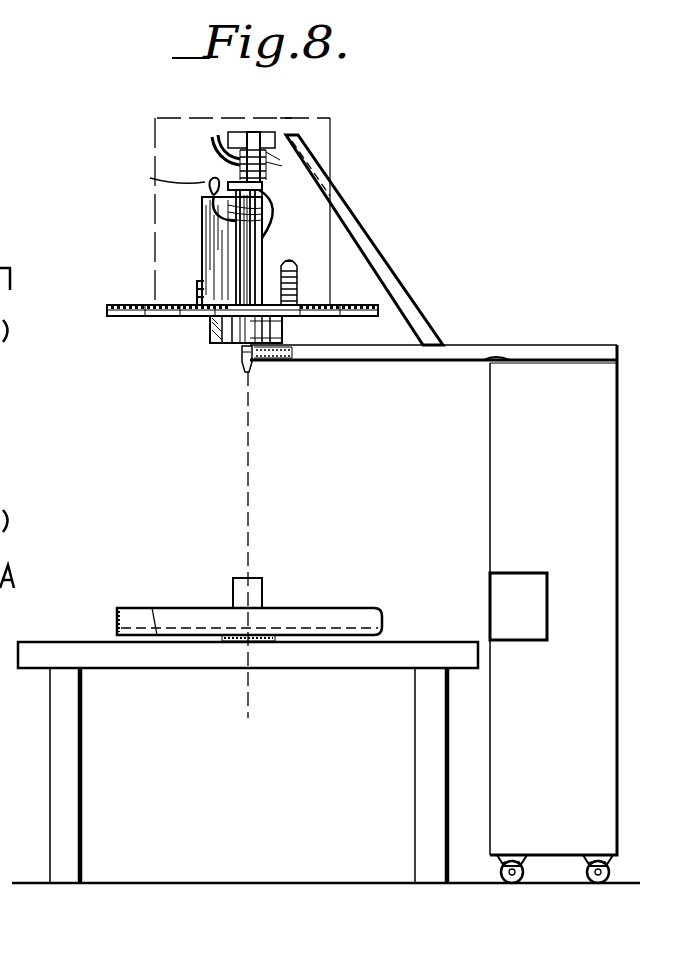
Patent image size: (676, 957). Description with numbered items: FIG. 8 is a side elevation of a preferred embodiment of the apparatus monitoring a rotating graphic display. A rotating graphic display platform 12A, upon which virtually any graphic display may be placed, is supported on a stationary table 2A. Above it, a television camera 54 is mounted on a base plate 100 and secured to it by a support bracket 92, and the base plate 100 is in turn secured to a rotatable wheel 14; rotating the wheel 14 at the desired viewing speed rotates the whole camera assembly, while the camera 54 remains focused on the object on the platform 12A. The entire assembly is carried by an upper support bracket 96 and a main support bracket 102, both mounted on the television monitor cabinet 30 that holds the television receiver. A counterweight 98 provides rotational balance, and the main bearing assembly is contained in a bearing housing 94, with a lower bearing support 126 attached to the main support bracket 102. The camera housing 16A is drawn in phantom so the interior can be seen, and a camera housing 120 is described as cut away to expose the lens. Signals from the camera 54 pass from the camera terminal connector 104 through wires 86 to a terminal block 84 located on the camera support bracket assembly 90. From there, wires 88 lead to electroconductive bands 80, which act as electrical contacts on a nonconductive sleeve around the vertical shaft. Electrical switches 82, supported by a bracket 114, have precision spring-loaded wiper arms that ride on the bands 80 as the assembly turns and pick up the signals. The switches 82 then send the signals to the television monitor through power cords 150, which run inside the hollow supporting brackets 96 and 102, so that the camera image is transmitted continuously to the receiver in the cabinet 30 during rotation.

The stationary table 2A is at (60, 656).
The rotating graphic display platform 12A is at (392, 592).
The rotatable wheel 14 is at (140, 317).
The camera housing 16A is at (156, 152).
The television monitor cabinet 30 is at (507, 488).
The television camera 54 is at (213, 238).
The electroconductive bands 80 is at (213, 137).
The electrical switches 82 is at (262, 173).
The terminal block 84 is at (250, 233).
The wires 86 is at (209, 182).
The wires 88 is at (265, 199).
The camera support bracket assembly 90 is at (245, 269).
The support bracket 92 is at (197, 287).
The bearing housing 94 is at (242, 354).
The upper support bracket 96 is at (400, 297).
The counterweight 98 is at (298, 284).
The base plate 100 is at (213, 337).
The main support bracket 102 is at (470, 354).
The camera terminal connector 104 is at (152, 173).
The bracket 114 is at (285, 118).
The camera housing 120 is at (283, 327).
The lower bearing support 126 is at (261, 364).
The power cords 150 is at (297, 133).